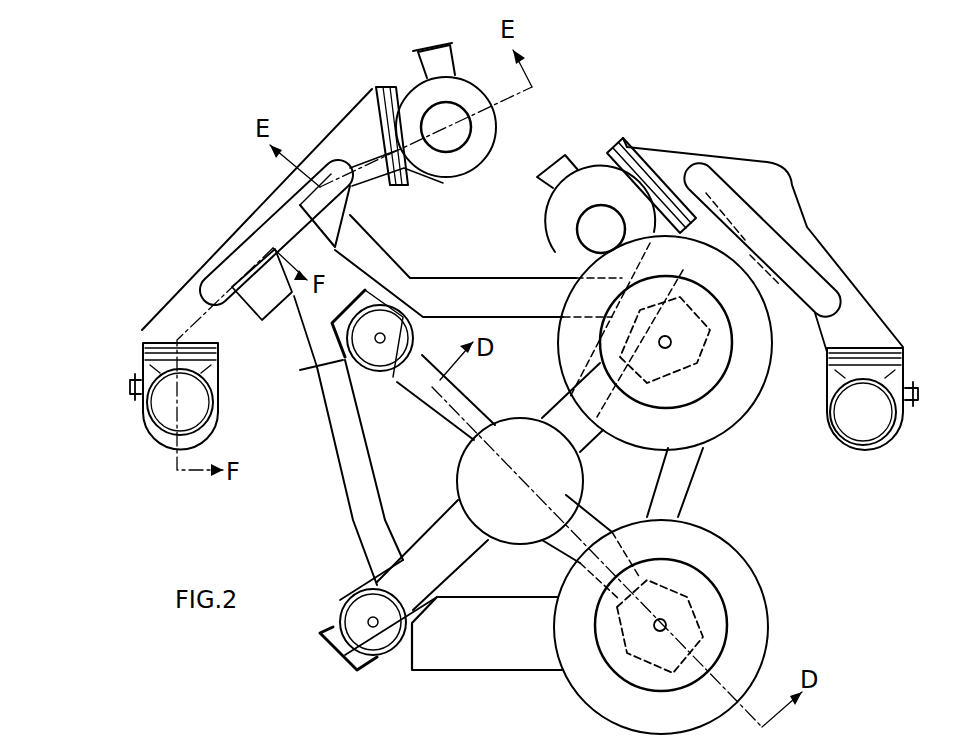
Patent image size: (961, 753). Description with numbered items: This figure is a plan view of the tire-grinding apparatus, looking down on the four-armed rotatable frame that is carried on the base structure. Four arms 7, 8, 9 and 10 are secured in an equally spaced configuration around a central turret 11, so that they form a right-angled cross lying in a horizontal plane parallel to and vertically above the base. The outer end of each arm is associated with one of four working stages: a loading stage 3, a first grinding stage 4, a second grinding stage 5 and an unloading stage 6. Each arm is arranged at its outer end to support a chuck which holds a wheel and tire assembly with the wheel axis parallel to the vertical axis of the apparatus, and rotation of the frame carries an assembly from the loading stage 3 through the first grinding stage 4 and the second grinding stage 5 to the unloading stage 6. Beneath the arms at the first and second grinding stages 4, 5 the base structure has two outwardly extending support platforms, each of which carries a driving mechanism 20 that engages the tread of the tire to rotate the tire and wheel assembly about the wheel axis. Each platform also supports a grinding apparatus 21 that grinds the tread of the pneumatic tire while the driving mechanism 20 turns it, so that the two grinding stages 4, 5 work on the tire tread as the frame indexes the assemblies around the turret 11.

The loading stage 3 is at (355, 595).
The first grinding stage 4 is at (317, 365).
The second grinding stage 5 is at (693, 363).
The unloading stage 6 is at (693, 603).
The arm 7 is at (443, 545).
The arm 8 is at (447, 380).
The arm 9 is at (567, 405).
The arm 10 is at (577, 523).
The central turret 11 is at (570, 470).
The driving mechanism 20 is at (168, 423).
The grinding apparatus 21 is at (352, 128).